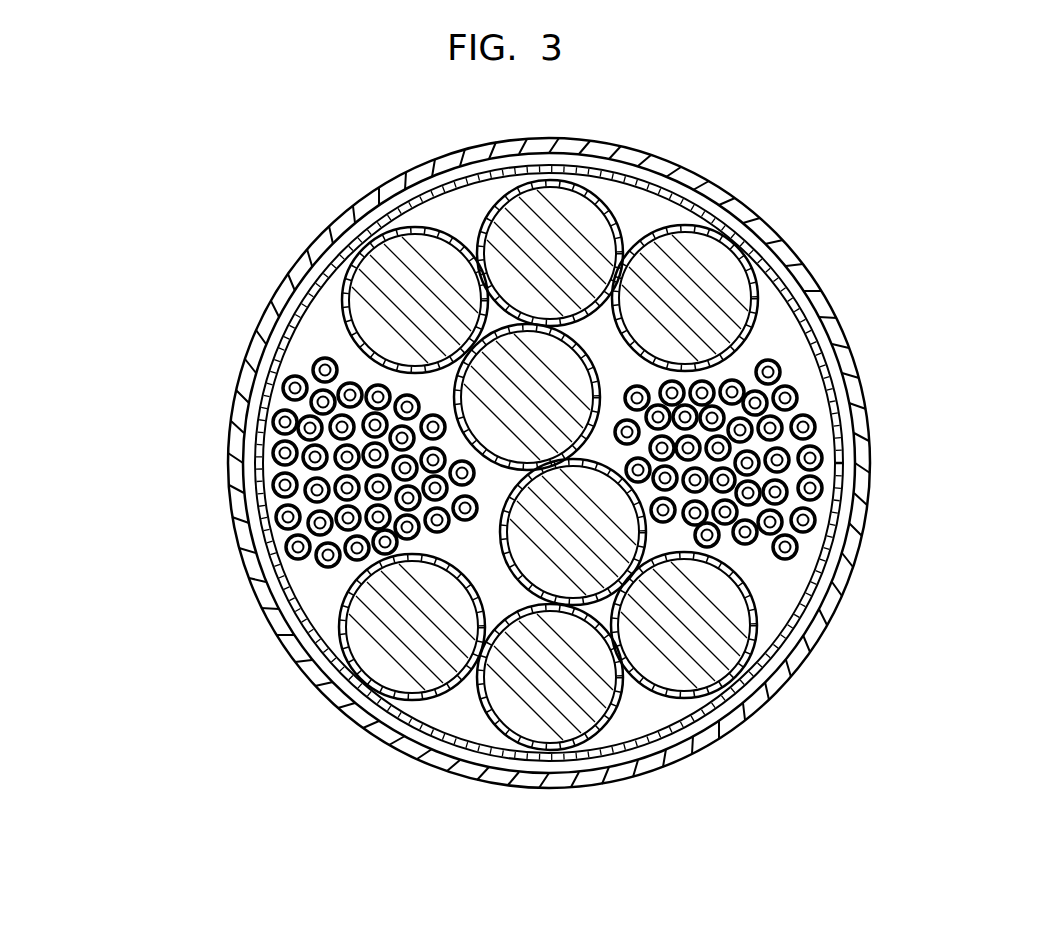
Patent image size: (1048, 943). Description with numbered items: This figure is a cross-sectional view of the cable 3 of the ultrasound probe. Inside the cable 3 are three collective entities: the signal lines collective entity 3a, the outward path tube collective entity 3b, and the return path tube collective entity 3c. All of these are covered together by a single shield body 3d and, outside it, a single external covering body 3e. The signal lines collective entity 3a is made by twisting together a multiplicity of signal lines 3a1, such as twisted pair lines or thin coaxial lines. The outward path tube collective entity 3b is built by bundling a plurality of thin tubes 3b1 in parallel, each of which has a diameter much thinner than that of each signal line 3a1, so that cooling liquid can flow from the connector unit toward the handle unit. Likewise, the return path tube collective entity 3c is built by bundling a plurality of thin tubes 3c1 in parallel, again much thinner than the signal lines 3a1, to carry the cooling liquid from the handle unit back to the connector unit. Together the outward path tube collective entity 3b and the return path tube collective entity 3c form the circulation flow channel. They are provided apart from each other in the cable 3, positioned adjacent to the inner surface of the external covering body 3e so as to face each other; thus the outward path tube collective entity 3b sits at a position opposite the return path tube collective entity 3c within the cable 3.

The cable 3 is at (327, 178).
The signal lines collective entity 3a is at (632, 695).
The signal lines 3a1 is at (468, 748).
The outward path tube collective entity 3b is at (323, 582).
The thin tubes 3b1 is at (265, 470).
The return path tube collective entity 3c is at (770, 568).
The thin tubes 3c1 is at (817, 417).
The shield body 3d is at (716, 188).
The external covering body 3e is at (633, 157).